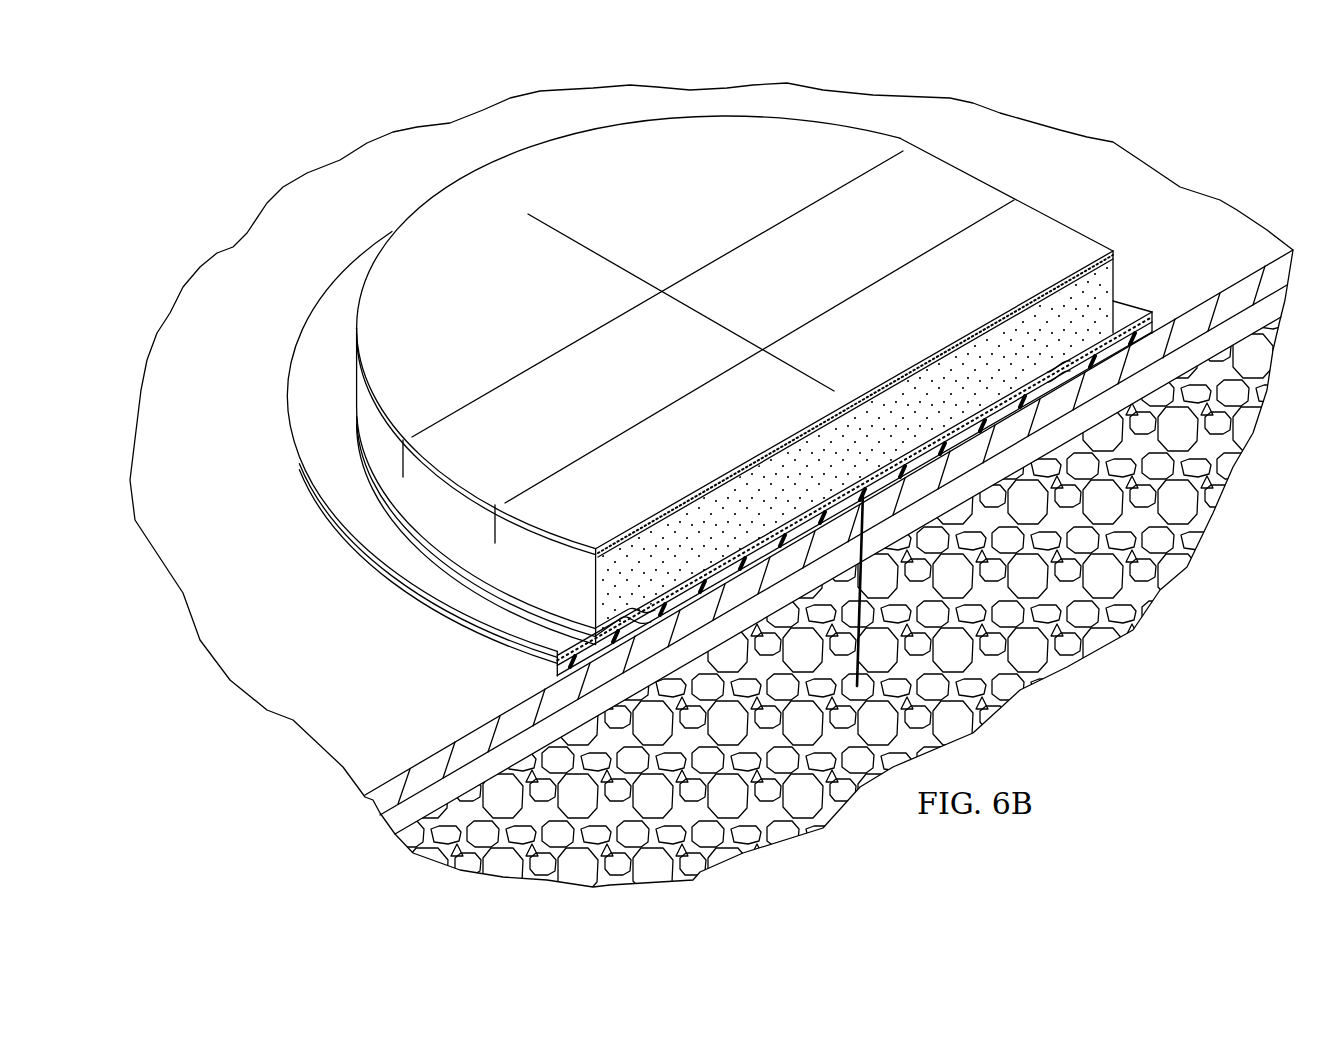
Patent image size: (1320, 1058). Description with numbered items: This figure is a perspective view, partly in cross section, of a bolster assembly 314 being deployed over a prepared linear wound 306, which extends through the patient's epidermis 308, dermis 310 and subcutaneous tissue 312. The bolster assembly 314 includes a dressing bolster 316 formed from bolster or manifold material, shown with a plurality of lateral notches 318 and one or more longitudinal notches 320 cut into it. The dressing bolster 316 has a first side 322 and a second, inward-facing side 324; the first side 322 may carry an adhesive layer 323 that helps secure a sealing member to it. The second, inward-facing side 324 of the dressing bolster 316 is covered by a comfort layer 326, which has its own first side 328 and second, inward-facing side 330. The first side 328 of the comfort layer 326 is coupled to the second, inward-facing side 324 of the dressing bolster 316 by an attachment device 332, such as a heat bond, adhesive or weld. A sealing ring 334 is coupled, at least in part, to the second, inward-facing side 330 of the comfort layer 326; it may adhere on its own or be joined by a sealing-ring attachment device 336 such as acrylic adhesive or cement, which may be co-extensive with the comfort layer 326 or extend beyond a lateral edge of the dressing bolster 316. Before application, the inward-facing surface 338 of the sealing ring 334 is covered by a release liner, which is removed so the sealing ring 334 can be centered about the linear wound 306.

The linear wound 306 is at (863, 492).
The epidermis 308 is at (363, 797).
The dermis 310 is at (382, 820).
The subcutaneous tissue 312 is at (925, 674).
The bolster assembly 314 is at (1070, 222).
The dressing bolster 316 is at (727, 522).
The lateral notches 318 is at (786, 218).
The longitudinal notches 320 is at (597, 252).
The first side 322 is at (957, 177).
The adhesive layer 323 is at (935, 355).
The second, inward-facing side 324 is at (757, 578).
The comfort layer 326 is at (935, 470).
The first side 328 is at (1118, 320).
The second, inward-facing side 330 is at (977, 402).
The attachment device 332 is at (602, 612).
The sealing ring 334 is at (646, 680).
The sealing-ring attachment device 336 is at (540, 658).
The inward-facing surface 338 is at (1147, 352).